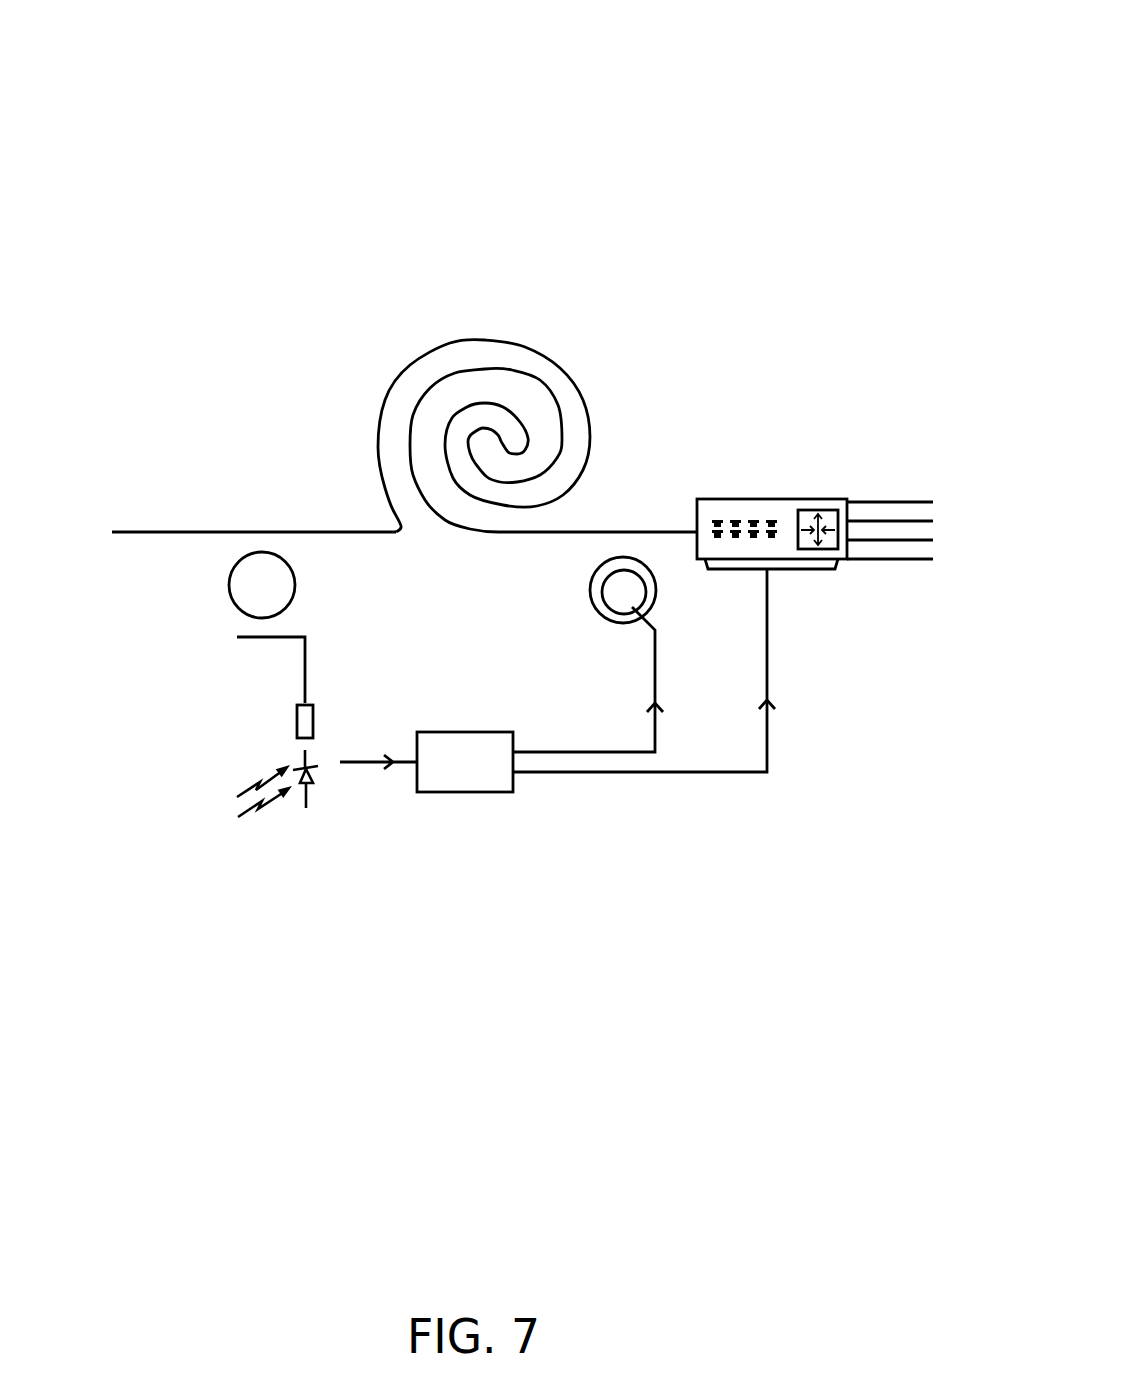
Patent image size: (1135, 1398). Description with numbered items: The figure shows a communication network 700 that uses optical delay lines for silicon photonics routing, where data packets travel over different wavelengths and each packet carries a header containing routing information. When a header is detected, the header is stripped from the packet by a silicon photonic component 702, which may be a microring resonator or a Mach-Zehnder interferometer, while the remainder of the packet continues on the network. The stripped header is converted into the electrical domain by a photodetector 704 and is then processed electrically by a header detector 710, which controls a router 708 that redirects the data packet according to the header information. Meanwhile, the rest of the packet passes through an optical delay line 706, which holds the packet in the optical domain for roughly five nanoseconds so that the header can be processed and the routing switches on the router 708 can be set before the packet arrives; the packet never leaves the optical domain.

The communication network 700 is at (145, 53).
The silicon photonic component 702 is at (233, 604).
The photodetector 704 is at (258, 729).
The optical delay line 706 is at (620, 390).
The router 708 is at (797, 432).
The header detector 710 is at (389, 838).